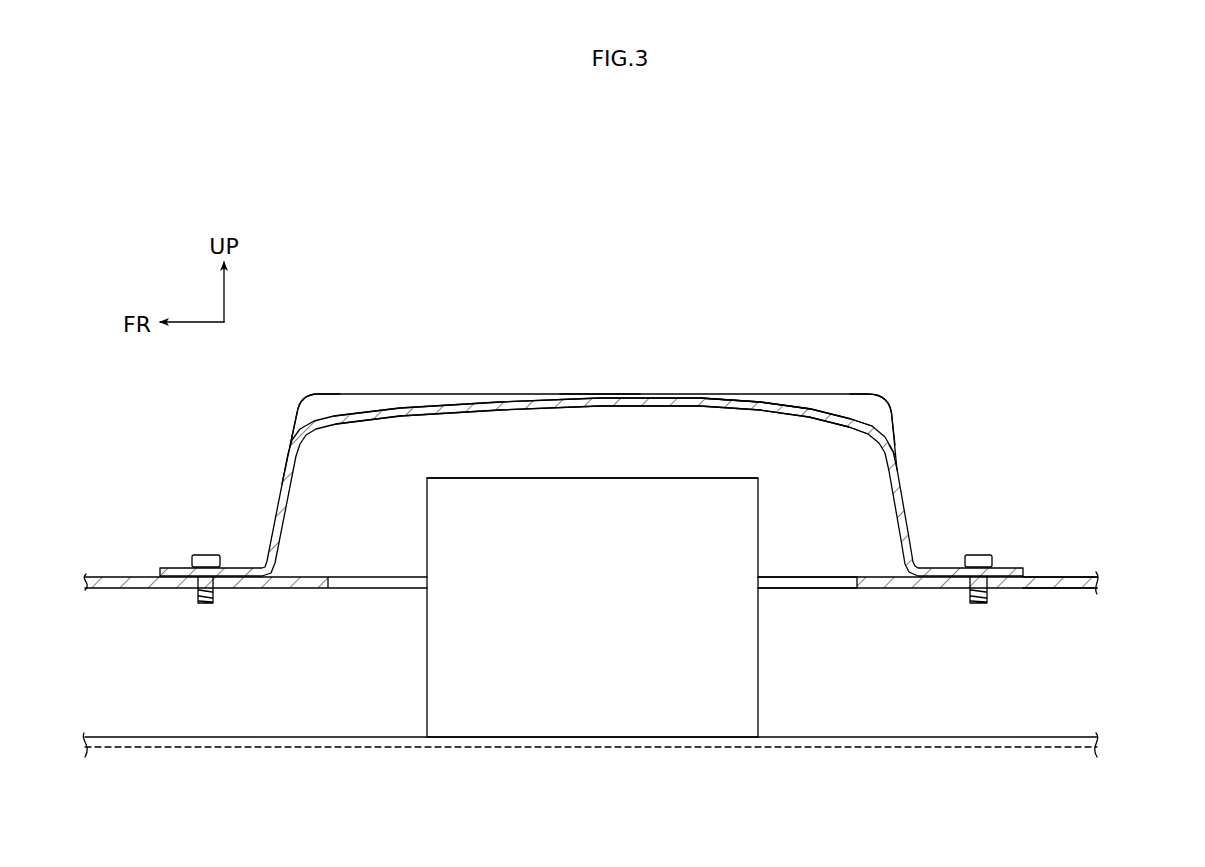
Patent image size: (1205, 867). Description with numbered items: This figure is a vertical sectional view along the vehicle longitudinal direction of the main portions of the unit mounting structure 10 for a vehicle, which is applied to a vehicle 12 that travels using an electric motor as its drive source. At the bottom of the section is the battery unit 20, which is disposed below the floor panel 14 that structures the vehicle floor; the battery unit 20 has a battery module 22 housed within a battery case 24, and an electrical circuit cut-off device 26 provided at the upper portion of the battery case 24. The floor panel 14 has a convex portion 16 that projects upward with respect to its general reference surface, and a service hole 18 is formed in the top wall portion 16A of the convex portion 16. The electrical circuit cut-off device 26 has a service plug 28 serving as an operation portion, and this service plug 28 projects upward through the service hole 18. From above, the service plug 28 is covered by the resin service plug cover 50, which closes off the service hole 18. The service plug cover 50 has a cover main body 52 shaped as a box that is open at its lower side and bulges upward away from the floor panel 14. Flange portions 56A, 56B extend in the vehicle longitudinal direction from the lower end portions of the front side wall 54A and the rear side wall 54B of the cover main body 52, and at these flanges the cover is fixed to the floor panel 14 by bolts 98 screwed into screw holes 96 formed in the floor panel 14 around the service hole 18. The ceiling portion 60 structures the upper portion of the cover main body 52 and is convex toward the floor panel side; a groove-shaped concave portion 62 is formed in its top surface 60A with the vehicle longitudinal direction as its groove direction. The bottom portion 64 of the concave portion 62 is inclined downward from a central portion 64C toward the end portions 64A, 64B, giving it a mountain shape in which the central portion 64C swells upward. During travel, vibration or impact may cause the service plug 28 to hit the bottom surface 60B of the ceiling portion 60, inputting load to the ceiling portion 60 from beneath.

The unit mounting structure for a vehicle 10 is at (1025, 388).
The vehicle 12 is at (1113, 292).
The floor panel 14 is at (1100, 583).
The convex portion 16 is at (1089, 577).
The top wall portion 16A is at (1062, 577).
The service hole 18 is at (846, 590).
The battery unit 20 is at (1070, 750).
The battery module 22 is at (203, 749).
The battery case 24 is at (168, 737).
The electrical circuit cut-off device 26 is at (427, 660).
The service plug 28 is at (748, 520).
The service plug cover 50 is at (840, 332).
The cover main body 52 is at (892, 437).
The front side wall 54A is at (280, 497).
The rear side wall 54B is at (906, 493).
The flange portion 56A is at (172, 567).
The flange portion 56B is at (1012, 567).
The ceiling portion 60 is at (830, 420).
The top surface 60A is at (800, 412).
The bottom surface 60B is at (522, 418).
The concave portion 62 is at (748, 406).
The bottom portion 64 is at (673, 399).
The end portion 64A is at (319, 418).
The end portion 64B is at (868, 400).
The central portion 64C is at (600, 400).
The screw hole 96 is at (206, 604).
The bolt 98 is at (208, 555).